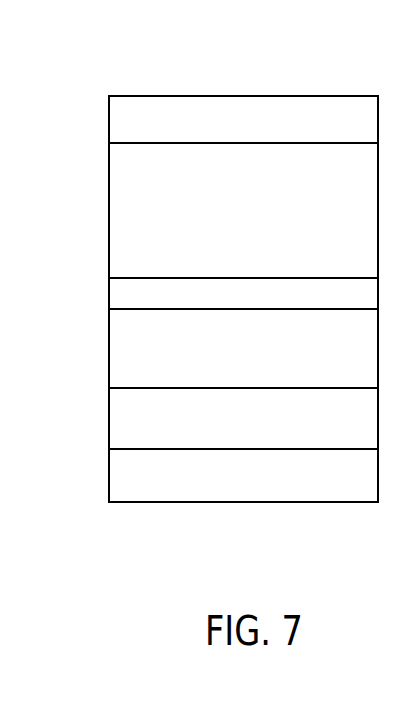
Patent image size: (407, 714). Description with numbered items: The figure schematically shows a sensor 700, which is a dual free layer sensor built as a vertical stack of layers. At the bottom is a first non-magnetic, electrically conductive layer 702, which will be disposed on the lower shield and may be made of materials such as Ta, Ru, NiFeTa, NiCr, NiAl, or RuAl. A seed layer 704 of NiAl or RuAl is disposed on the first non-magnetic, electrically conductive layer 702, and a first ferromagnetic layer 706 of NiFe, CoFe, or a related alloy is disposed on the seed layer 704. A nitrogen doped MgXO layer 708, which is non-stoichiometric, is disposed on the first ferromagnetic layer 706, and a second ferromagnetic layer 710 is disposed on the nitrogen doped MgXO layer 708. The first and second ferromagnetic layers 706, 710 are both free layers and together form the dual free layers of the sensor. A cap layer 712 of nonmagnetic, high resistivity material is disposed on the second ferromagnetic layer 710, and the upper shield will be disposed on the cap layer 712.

The sensor 700 is at (122, 52).
The first non-magnetic, electrically conductive layer 702 is at (260, 487).
The seed layer 704 is at (260, 431).
The first ferromagnetic layer 706 is at (260, 360).
The nitrogen doped MgXO layer 708 is at (260, 303).
The second ferromagnetic layer 710 is at (260, 222).
The cap layer 712 is at (260, 132).